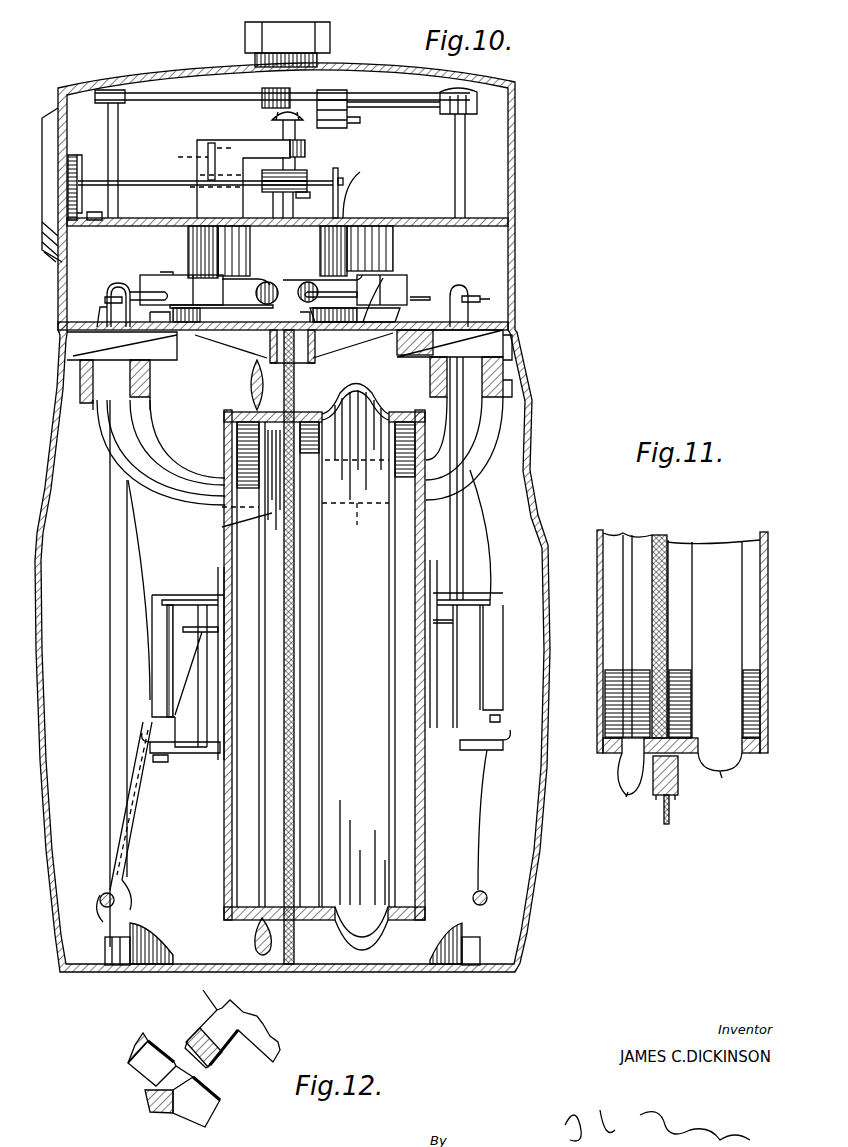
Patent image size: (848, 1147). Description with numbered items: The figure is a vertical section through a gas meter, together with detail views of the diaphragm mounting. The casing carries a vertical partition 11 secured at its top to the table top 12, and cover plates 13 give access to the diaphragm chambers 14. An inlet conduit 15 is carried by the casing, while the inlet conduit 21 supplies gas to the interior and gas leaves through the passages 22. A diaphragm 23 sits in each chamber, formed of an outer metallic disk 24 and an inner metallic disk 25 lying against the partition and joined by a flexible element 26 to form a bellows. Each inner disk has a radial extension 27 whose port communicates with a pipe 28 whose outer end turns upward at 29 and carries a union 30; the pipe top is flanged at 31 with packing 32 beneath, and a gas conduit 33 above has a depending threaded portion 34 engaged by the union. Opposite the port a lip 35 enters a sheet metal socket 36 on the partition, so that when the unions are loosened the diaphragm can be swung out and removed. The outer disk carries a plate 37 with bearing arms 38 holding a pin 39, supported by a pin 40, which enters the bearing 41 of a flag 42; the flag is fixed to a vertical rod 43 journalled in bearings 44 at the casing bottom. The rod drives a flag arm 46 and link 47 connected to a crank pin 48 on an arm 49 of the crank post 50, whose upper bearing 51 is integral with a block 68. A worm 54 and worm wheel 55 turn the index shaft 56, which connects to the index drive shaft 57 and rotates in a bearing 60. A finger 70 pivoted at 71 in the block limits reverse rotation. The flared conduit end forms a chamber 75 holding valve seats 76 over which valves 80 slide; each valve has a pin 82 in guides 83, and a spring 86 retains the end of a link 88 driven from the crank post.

In FIG. 10, the vertical partition 11 is at (296, 948).
In FIG. 11, the vertical partition 11 is at (666, 826).
In FIG. 10, the table top 12 is at (383, 278).
In FIG. 10, the cover plates 13 is at (540, 855).
In FIG. 10, the diaphragm chambers 14 is at (294, 673).
In FIG. 10, the inlet conduit 15 is at (330, 36).
In FIG. 10, the inlet conduit 21 is at (272, 205).
In FIG. 10, the passages 22 is at (246, 355).
In FIG. 10, the diaphragm 23 is at (252, 946).
In FIG. 11, the diaphragm 23 is at (629, 794).
In FIG. 10, the outer metallic disk 24 is at (415, 810).
In FIG. 11, the outer metallic disk 24 is at (598, 628).
In FIG. 10, the inner metallic disk 25 is at (300, 765).
In FIG. 11, the inner metallic disk 25 is at (652, 542).
In FIG. 10, the flexible element 26 is at (378, 935).
In FIG. 11, the flexible element 26 is at (620, 778).
In FIG. 10, the radial extension 27 is at (340, 550).
In FIG. 10, the pipe 28 is at (190, 490).
In FIG. 10, the upturned end of pipe 29 is at (145, 462).
In FIG. 10, the union 30 is at (504, 378).
In FIG. 10, the flange 31 is at (512, 352).
In FIG. 10, the packing 32 is at (80, 385).
In FIG. 10, the gas conduit 33 is at (67, 345).
In FIG. 10, the depending threaded portion 34 is at (80, 378).
In FIG. 11, the lip 35 is at (679, 776).
In FIG. 12, the lip 35 is at (225, 1052).
In FIG. 11, the socket 36 is at (656, 800).
In FIG. 12, the socket 36 is at (155, 1108).
In FIG. 10, the plate 37 is at (212, 760).
In FIG. 10, the bearing arms 38 is at (180, 598).
In FIG. 10, the pin 39 is at (165, 764).
In FIG. 10, the pin 40 is at (142, 735).
In FIG. 10, the bearing 41 is at (152, 700).
In FIG. 10, the flags 42 is at (130, 637).
In FIG. 10, the vertical rod or shaft 43 is at (118, 150).
In FIG. 10, the bearings 44 is at (135, 943).
In FIG. 10, the crank or flag arm 46 is at (140, 100).
In FIG. 10, the link 47 is at (272, 116).
In FIG. 10, the crank pin 48 is at (340, 92).
In FIG. 10, the arm 49 is at (358, 124).
In FIG. 10, the crank post 50 is at (305, 156).
In FIG. 10, the upper bearing 51 is at (283, 138).
In FIG. 10, the worm 54 is at (305, 174).
In FIG. 10, the worm wheel 55 is at (308, 205).
In FIG. 10, the index shaft 56 is at (150, 180).
In FIG. 10, the drive shaft 57 is at (90, 162).
In FIG. 10, the bearing 60 is at (340, 176).
In FIG. 10, the block 68 is at (205, 205).
In FIG. 10, the finger 70 is at (212, 142).
In FIG. 10, the pivot 71 is at (183, 156).
In FIG. 10, the chamber 75 is at (368, 218).
In FIG. 10, the valve seats 76 is at (212, 322).
In FIG. 10, the valve 80 is at (182, 274).
In FIG. 10, the pin 82 is at (105, 298).
In FIG. 10, the guides 83 is at (116, 282).
In FIG. 10, the spring 86 is at (168, 275).
In FIG. 10, the links 88 is at (258, 276).